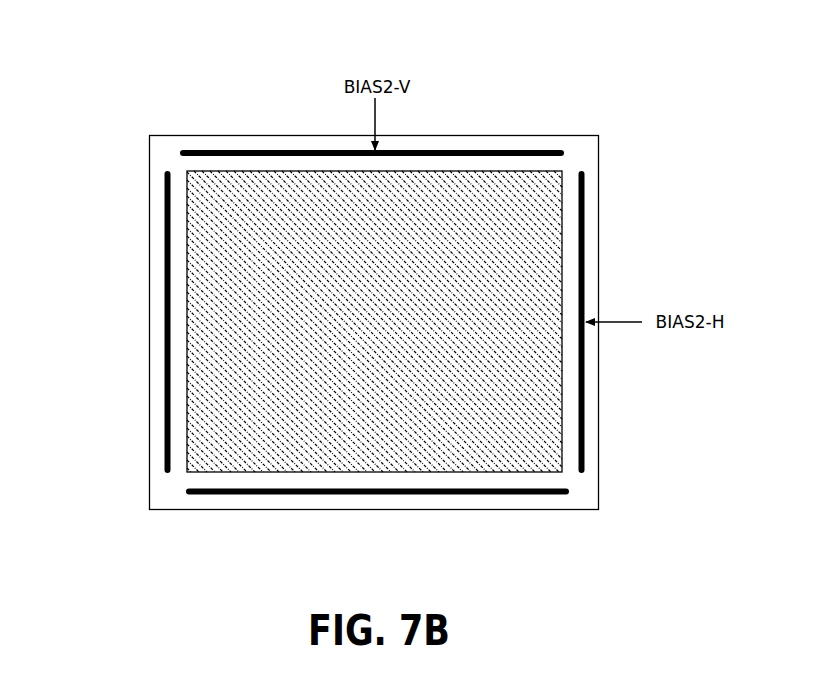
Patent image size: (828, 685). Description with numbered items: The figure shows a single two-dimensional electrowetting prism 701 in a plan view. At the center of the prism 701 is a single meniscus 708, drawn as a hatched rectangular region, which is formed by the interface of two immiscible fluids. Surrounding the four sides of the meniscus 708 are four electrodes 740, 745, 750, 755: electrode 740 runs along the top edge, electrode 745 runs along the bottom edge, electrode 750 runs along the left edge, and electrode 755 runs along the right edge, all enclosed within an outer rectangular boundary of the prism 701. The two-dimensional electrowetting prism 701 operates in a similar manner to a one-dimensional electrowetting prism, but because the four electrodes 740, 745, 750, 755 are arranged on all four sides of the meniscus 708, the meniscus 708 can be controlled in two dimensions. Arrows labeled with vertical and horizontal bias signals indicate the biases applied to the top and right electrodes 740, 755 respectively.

The two-dimensional electrowetting prism 701 is at (109, 81).
The meniscus 708 is at (353, 326).
The electrode 740 is at (278, 151).
The electrode 745 is at (312, 491).
The electrode 750 is at (167, 269).
The electrode 755 is at (583, 237).